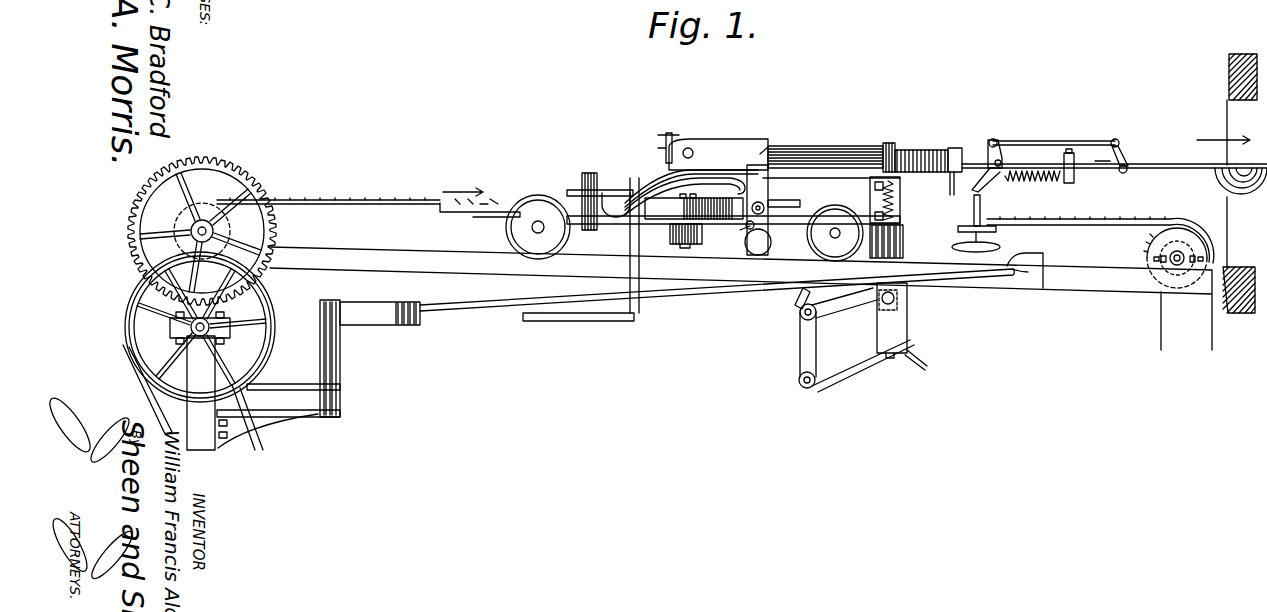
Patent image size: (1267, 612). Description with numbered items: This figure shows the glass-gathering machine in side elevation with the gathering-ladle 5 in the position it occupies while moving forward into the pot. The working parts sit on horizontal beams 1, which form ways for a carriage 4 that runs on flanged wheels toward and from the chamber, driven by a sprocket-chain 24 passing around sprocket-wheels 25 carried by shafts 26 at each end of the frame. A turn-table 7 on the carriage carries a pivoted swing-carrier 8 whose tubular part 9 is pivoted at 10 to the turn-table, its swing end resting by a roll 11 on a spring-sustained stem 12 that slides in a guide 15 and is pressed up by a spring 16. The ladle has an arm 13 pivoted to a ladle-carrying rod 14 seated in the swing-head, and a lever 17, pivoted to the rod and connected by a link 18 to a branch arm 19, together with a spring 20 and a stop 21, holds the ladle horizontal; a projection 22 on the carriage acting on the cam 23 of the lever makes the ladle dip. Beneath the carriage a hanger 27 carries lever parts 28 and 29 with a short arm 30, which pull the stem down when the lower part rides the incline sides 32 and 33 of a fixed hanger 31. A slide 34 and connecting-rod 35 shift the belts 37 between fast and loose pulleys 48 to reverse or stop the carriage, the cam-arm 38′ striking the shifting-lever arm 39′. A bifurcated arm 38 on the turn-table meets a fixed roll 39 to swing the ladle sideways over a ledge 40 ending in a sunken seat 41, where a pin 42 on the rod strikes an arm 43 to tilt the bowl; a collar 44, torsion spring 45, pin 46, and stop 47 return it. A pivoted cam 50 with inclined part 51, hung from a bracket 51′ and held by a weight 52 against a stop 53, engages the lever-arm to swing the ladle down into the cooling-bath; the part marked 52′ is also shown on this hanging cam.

The horizontal beams 1 is at (460, 264).
The carriage 4 is at (664, 224).
The gathering-ladle 5 is at (855, 183).
The turn-table 7 is at (698, 205).
The swing-carrier 8 is at (718, 148).
The tubular part of the carrier 9 is at (812, 152).
The pivot 10 is at (693, 154).
The roll 11 is at (889, 143).
The spring-sustained stem 12 is at (876, 196).
The ladle-arm 13 is at (1168, 164).
The ladle-carrying rod 14 is at (1100, 170).
The guide 15 is at (905, 247).
The spring 16 is at (900, 204).
The lever 17 is at (1000, 142).
The link 18 is at (1054, 145).
The branch arm 19 is at (1128, 154).
The spring 20 is at (1039, 173).
The stop 21 is at (1114, 140).
The projection 22 is at (982, 204).
The cam 23 is at (982, 180).
The sprocket-chain 24 is at (362, 199).
The sprocket-wheels 25 is at (230, 230).
The shafts 26 is at (176, 222).
The hanger 27 is at (800, 303).
The lever part 28 is at (848, 308).
The lever part 29 is at (814, 352).
The short arm 30 is at (795, 296).
The hanger 31 is at (896, 325).
The incline side 32 is at (858, 376).
The incline side 33 is at (928, 363).
The slide 34 is at (1038, 288).
The connecting-rod 35 is at (480, 304).
The belts 37 is at (288, 384).
The arm 38 is at (634, 192).
The cam-arm 38′ is at (578, 327).
The roll 39 is at (594, 174).
The cam-arm 39′ is at (418, 326).
The ledge 40 is at (826, 200).
The sunken seat 41 is at (618, 212).
The pin 42 is at (951, 196).
The arm 43 is at (642, 180).
The collar 44 is at (664, 149).
The spring 45 is at (955, 148).
The pin 46 is at (672, 134).
The stop 47 is at (664, 134).
The loose pulleys 48 is at (272, 296).
The cam 50 is at (770, 148).
The inclined part 51 is at (664, 180).
The bracket 51′ is at (795, 205).
The weight 52 is at (748, 172).
The disc 52′ is at (764, 245).
The stop 53 is at (745, 230).